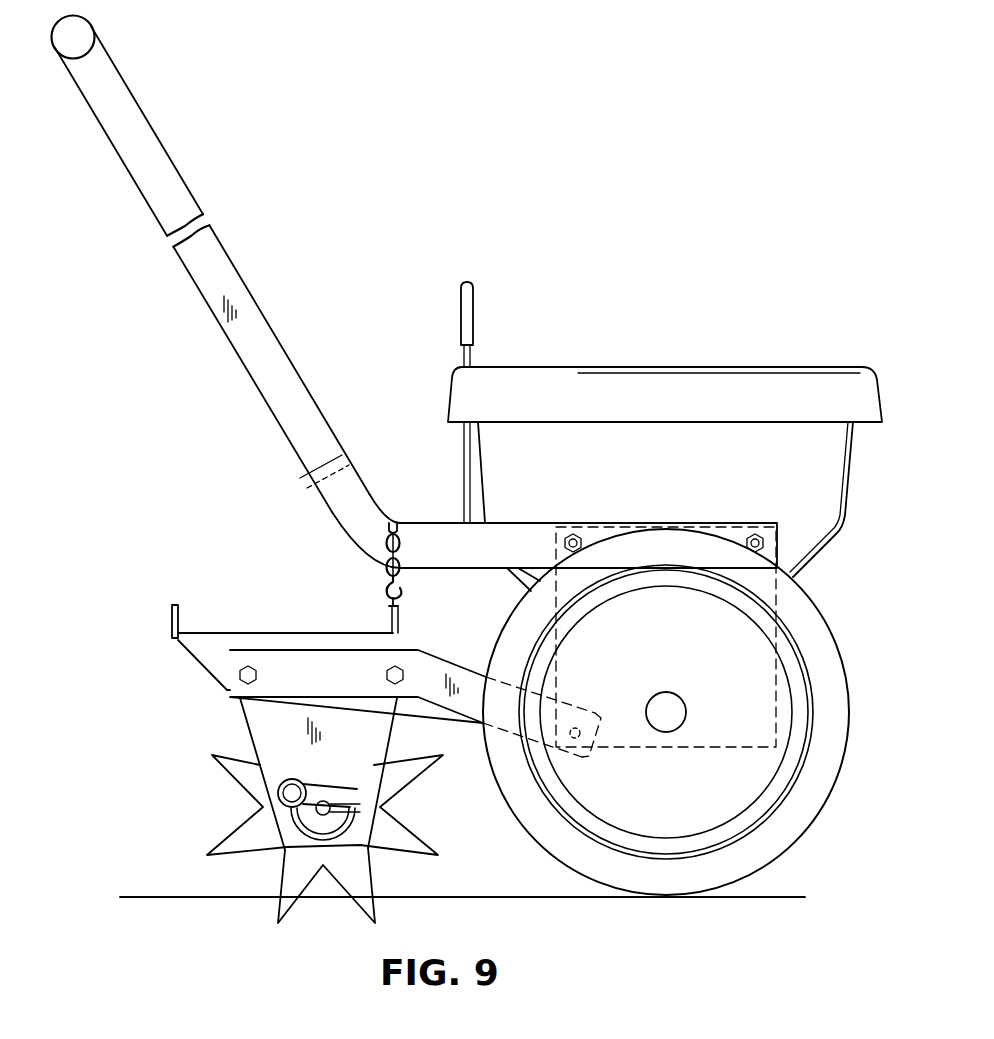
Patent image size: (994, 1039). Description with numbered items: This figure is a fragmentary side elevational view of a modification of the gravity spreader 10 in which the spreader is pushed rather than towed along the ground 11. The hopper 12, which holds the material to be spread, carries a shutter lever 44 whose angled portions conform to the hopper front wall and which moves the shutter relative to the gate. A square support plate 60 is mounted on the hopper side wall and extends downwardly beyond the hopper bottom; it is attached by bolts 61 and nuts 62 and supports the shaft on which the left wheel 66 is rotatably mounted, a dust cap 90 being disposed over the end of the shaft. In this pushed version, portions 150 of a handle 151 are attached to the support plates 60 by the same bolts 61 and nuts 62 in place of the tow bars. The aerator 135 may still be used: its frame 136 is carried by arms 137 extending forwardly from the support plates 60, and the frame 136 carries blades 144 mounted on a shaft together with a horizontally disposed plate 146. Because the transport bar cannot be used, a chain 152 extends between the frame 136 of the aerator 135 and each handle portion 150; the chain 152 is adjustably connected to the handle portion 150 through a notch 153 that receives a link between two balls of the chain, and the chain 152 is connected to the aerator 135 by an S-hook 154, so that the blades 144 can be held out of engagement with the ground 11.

The gravity spreader 10 is at (628, 350).
The ground 11 is at (471, 897).
The hopper 12 is at (477, 473).
The shutter lever 44 is at (461, 441).
The support plate 60 is at (776, 607).
The bolt 61 is at (748, 538).
The nut 62 is at (775, 540).
The left wheel 66 is at (787, 857).
The dust cap 90 is at (674, 700).
The aerator 135 is at (221, 787).
The frame 136 is at (170, 620).
The arm 137 is at (456, 712).
The blade 144 is at (405, 823).
The horizontally disposed plate 146 is at (293, 632).
The portion of handle 150 is at (474, 570).
The handle 151 is at (233, 370).
The chain 152 is at (400, 541).
The notch 153 is at (397, 522).
The S-hook 154 is at (404, 596).